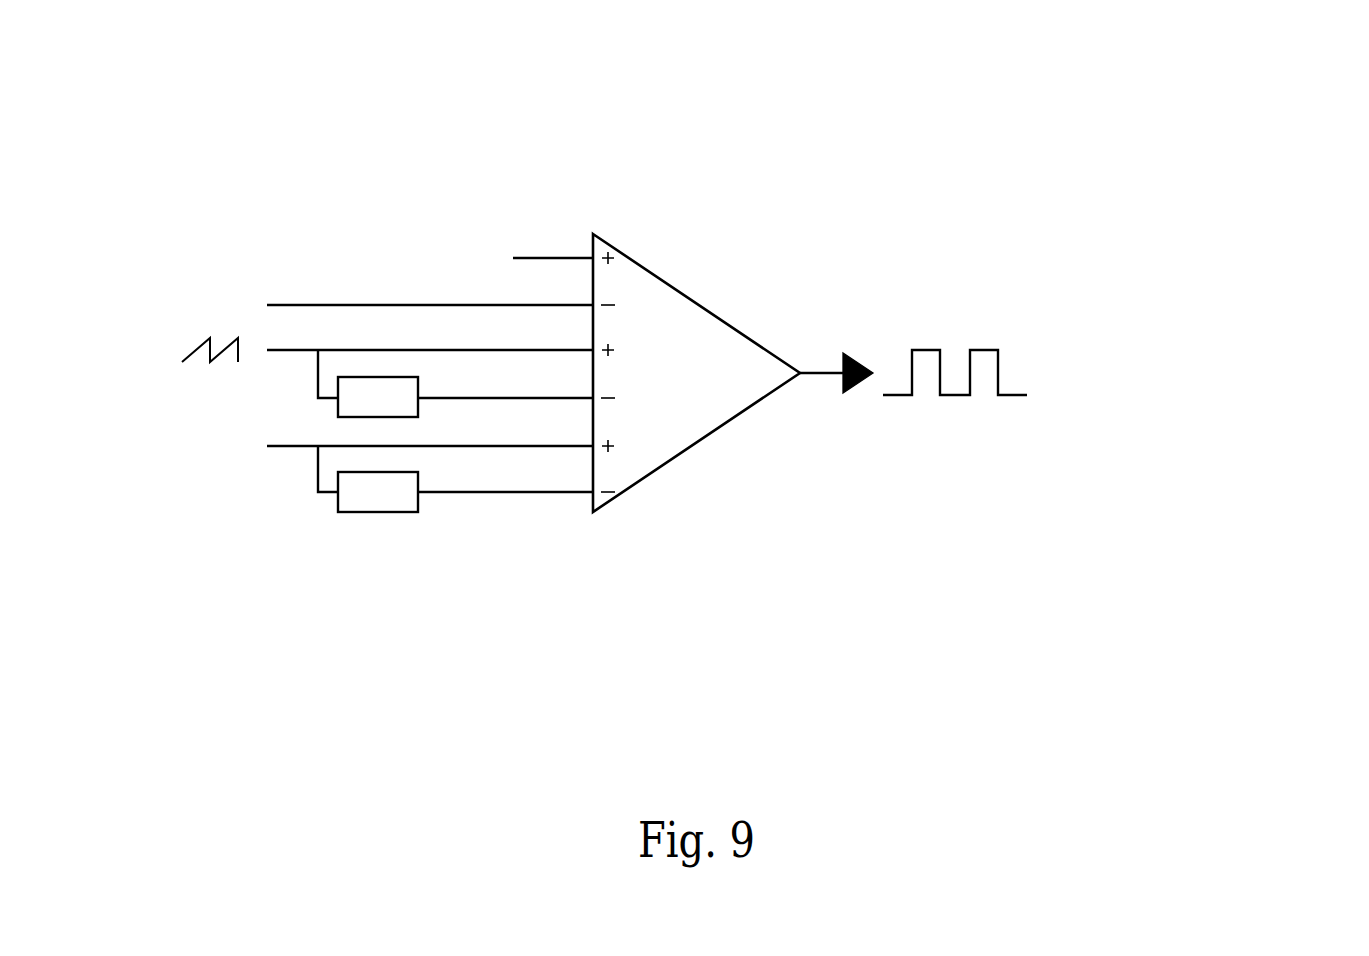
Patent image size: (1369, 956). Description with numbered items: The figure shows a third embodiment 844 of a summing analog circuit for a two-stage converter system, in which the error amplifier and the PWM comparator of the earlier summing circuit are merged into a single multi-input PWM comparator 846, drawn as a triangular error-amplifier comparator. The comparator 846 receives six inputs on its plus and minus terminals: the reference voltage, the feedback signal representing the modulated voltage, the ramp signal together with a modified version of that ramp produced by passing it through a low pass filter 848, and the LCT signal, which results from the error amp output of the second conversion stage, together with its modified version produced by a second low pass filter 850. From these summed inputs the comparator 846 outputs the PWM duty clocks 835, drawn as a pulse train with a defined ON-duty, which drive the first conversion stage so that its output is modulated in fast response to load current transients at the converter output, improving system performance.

The third embodiment 844 is at (263, 148).
The multi-input PWM comparator 846 is at (673, 288).
The PWM duty clocks 835 is at (820, 372).
The low pass filter 848 is at (337, 411).
The low pass filter 850 is at (380, 513).